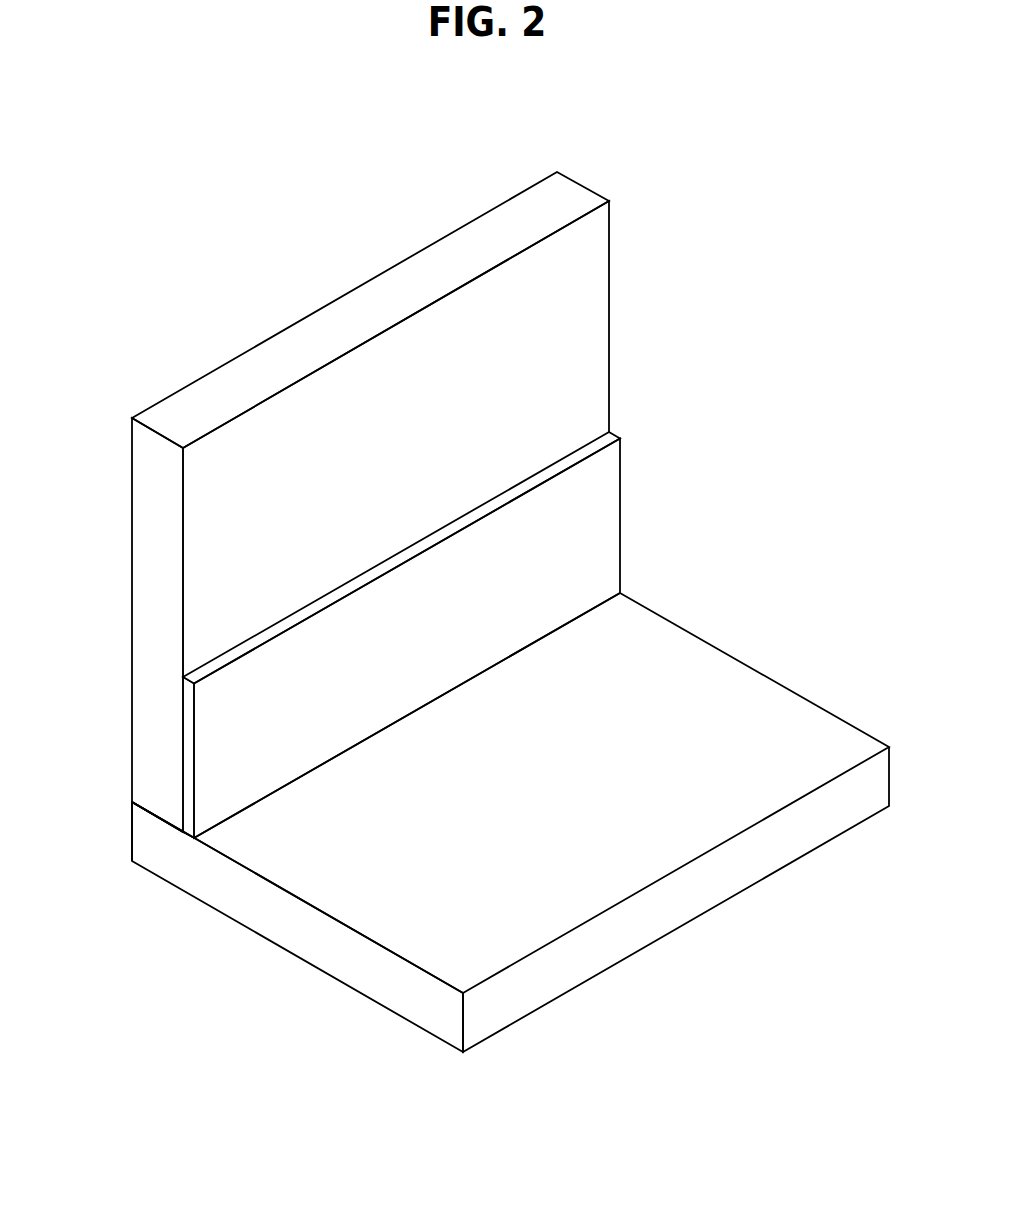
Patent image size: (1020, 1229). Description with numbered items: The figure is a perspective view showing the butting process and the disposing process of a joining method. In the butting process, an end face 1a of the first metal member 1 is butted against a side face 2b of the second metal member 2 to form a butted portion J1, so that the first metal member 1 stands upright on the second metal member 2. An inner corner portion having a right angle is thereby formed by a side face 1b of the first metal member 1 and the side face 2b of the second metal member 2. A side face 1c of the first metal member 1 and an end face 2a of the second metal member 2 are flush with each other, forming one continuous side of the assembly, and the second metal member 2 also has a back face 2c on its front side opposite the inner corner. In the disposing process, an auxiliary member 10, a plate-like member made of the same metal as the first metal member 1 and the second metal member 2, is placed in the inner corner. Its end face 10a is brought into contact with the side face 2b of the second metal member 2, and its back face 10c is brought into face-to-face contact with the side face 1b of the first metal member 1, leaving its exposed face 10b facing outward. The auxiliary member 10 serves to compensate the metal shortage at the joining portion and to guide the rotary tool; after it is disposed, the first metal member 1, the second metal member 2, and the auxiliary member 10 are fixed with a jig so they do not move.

The first metal member 1 is at (338, 507).
The end face of the first metal member 1a is at (158, 822).
The side face of the first metal member 1b is at (245, 527).
The side face of the first metal member 1c is at (132, 455).
The second metal member 2 is at (478, 822).
The end face of the second metal member 2a is at (132, 853).
The side face of the second metal member 2b is at (445, 880).
The back face 2c is at (293, 955).
The auxiliary member 10 is at (380, 703).
The end face of the auxiliary member 10a is at (192, 840).
The front surface of weld metal 10b is at (592, 553).
The back face of the auxiliary member 10c is at (183, 720).
The butted portion J1 is at (118, 800).